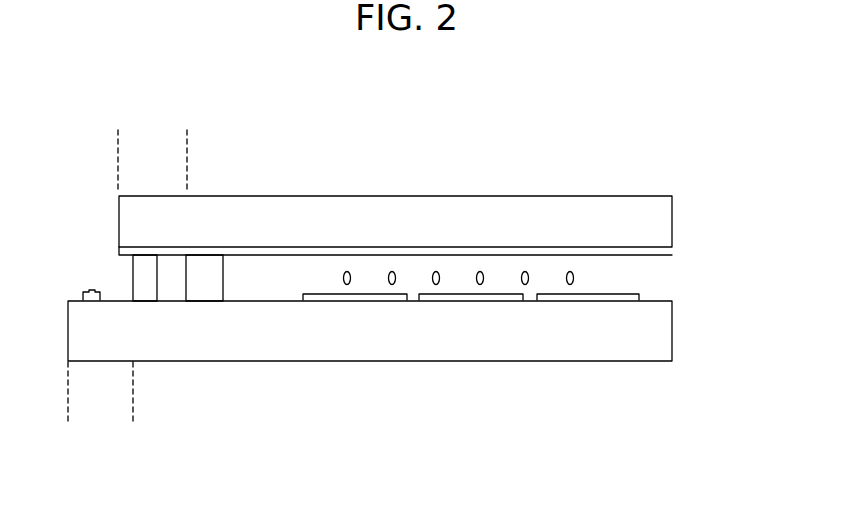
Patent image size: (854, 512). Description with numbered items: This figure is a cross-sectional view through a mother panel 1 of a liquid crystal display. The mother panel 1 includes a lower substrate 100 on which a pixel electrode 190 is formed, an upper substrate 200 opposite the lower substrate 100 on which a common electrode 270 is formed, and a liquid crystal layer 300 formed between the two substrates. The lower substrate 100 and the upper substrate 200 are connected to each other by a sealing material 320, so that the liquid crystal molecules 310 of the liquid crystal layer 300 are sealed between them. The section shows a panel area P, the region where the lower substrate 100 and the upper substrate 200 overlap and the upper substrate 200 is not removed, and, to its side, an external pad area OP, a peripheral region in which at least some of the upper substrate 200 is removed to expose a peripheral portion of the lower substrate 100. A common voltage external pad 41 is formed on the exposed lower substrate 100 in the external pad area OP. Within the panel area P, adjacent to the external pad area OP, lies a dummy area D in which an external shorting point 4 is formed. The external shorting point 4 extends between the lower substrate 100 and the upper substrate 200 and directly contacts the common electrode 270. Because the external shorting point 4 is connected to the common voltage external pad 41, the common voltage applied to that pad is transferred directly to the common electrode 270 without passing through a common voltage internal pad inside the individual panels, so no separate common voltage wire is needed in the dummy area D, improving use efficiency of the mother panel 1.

The mother panel 1 is at (416, 279).
The lower substrate 100 is at (398, 331).
The upper substrate 200 is at (655, 226).
The common electrode 270 is at (495, 250).
The liquid crystal layer 300 is at (516, 279).
The liquid crystal molecules 310 is at (343, 277).
The pixel electrode 190 is at (353, 297).
The external shorting point 4 is at (148, 272).
The sealing material 320 is at (207, 272).
The common voltage external pad 41 is at (92, 292).
The dummy area D is at (187, 134).
The external pad area OP is at (133, 423).
The panel area P is at (672, 423).